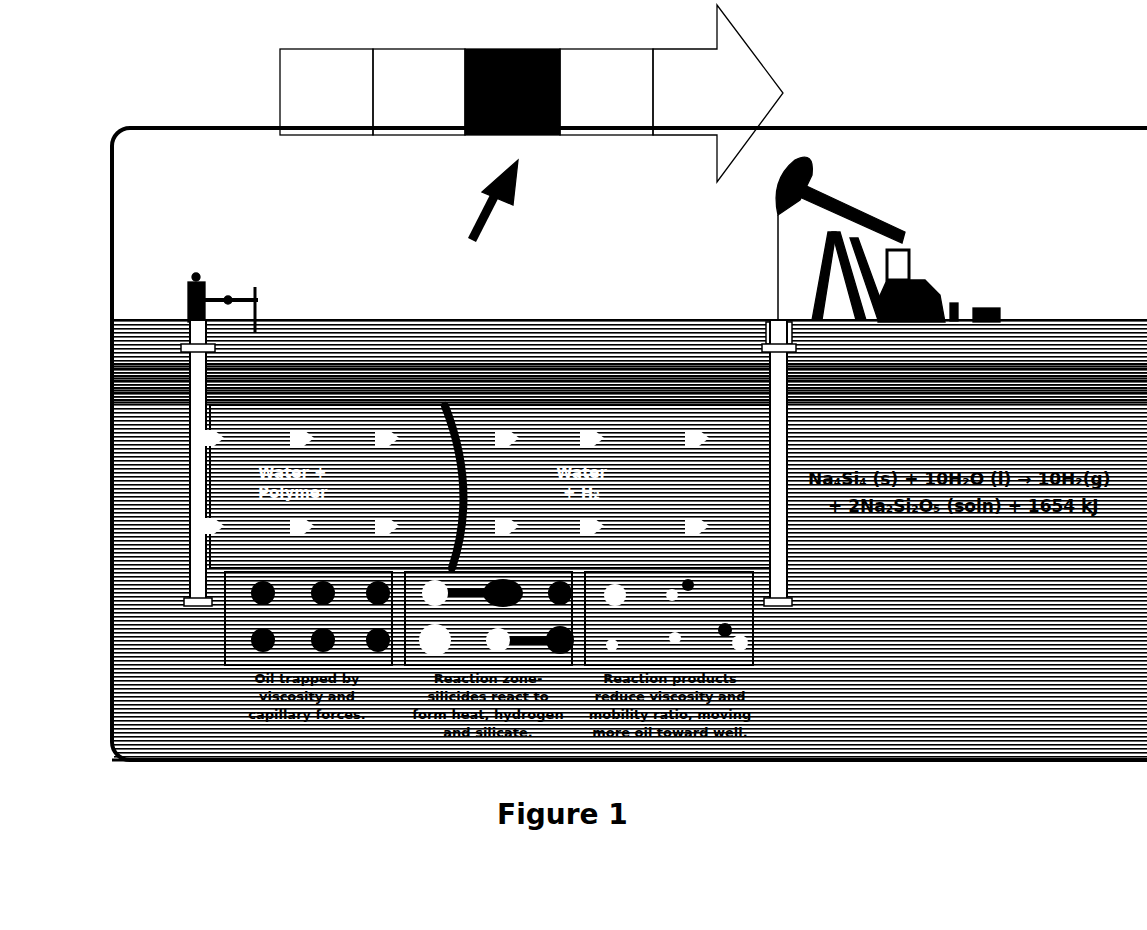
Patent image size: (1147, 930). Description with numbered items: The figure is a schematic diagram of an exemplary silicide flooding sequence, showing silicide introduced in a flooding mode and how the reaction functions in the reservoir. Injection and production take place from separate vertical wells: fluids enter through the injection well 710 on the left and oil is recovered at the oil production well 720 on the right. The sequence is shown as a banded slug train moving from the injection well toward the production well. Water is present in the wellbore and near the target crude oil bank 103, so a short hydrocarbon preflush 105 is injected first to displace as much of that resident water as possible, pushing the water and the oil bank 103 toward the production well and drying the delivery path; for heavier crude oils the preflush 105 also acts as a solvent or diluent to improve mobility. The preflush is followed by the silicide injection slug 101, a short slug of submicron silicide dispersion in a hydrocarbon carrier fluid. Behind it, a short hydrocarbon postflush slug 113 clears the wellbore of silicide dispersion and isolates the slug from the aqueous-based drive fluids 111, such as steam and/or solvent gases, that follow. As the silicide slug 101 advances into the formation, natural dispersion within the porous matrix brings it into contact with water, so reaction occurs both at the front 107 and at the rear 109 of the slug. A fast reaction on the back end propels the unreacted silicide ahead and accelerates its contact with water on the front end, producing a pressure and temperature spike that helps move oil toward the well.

The silicide injection slug 101 is at (447, 398).
The crude oil bank 103 is at (715, 424).
The preflush 105 is at (556, 424).
The front of the silicide slug 107 is at (483, 424).
The rear of the silicide slug 109 is at (418, 424).
The drive fluids 111 is at (277, 424).
The postflush slug 113 is at (419, 92).
The injection well 710 is at (212, 260).
The oil production well 720 is at (975, 260).